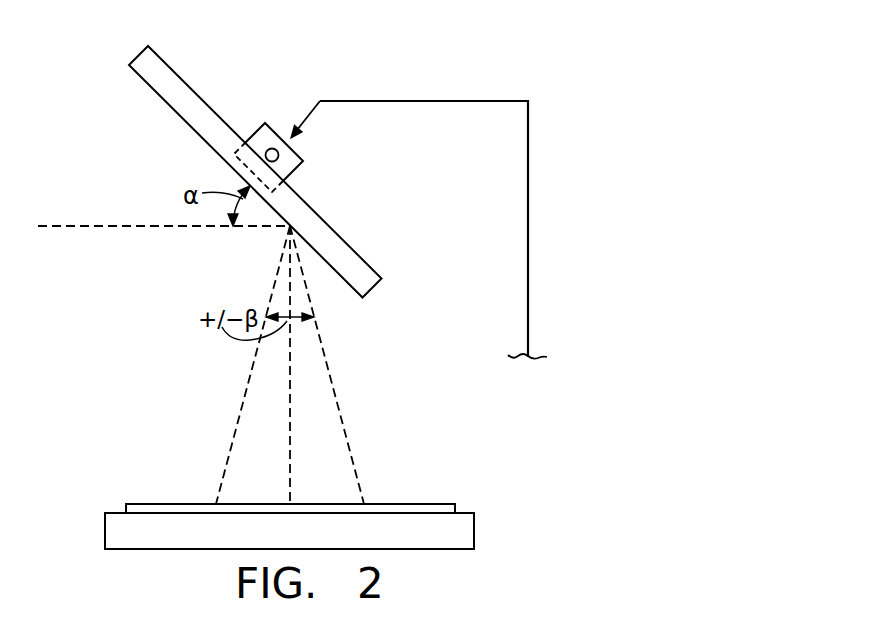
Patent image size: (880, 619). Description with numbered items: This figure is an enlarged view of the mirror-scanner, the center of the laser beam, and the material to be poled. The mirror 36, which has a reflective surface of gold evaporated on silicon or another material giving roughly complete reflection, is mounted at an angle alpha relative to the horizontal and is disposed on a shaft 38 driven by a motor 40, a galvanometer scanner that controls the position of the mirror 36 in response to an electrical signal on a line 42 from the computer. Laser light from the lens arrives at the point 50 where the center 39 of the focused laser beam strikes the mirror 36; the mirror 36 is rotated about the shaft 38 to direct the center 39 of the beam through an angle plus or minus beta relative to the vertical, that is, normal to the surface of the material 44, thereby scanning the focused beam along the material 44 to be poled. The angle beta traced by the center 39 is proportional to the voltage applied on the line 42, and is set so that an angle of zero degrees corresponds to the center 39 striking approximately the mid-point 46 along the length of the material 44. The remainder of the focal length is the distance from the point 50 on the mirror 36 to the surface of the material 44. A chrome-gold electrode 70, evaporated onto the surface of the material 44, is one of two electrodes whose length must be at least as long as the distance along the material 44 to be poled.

The mirror 36 is at (184, 80).
The shaft 38 is at (266, 150).
The motor 40 is at (304, 158).
The line 42 is at (528, 212).
The center of the focused laser beam 39 is at (168, 228).
The point 50 is at (291, 225).
The mid-point 46 is at (290, 503).
The electrode 70 is at (180, 503).
The material 44 is at (117, 527).